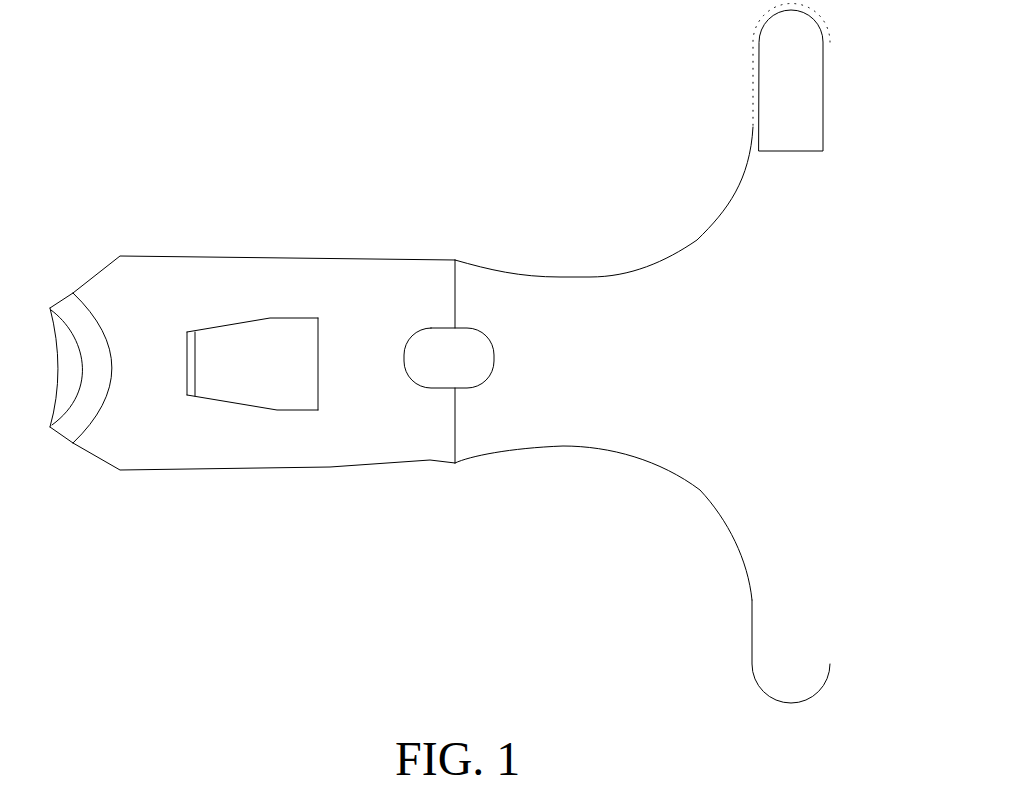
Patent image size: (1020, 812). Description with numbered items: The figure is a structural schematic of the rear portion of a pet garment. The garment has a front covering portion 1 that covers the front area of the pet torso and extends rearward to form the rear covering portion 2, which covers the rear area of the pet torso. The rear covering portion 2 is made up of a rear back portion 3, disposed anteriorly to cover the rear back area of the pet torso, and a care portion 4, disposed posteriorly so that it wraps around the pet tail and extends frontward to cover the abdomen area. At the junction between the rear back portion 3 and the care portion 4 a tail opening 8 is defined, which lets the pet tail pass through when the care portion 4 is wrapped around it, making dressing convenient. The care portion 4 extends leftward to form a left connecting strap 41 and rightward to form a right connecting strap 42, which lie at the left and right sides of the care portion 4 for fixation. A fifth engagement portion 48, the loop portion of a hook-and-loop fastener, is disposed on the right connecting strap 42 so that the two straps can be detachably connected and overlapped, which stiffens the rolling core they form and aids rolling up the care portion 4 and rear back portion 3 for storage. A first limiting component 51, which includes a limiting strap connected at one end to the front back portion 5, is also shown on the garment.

The front covering portion 1 is at (52, 150).
The rear covering portion 2 is at (325, 130).
The rear back portion 3 is at (295, 565).
The care portion 4 is at (545, 563).
The front back portion 5 is at (239, 346).
The tail opening 8 is at (379, 562).
The left connecting strap 41 is at (928, 605).
The right connecting strap 42 is at (928, 190).
The fifth engagement portion 48 is at (922, 93).
The first limiting component 51 is at (172, 542).